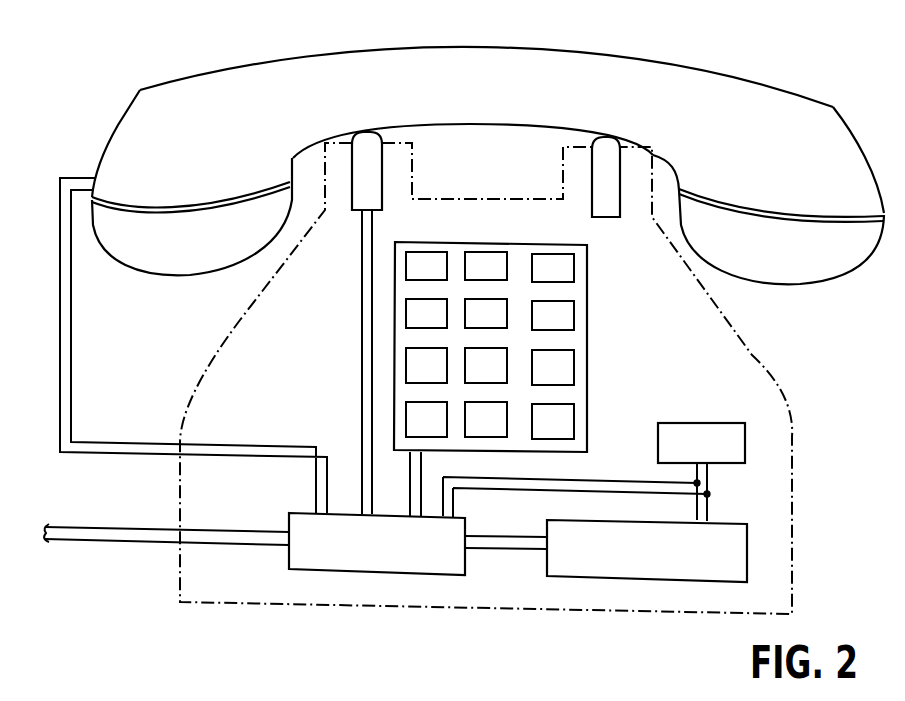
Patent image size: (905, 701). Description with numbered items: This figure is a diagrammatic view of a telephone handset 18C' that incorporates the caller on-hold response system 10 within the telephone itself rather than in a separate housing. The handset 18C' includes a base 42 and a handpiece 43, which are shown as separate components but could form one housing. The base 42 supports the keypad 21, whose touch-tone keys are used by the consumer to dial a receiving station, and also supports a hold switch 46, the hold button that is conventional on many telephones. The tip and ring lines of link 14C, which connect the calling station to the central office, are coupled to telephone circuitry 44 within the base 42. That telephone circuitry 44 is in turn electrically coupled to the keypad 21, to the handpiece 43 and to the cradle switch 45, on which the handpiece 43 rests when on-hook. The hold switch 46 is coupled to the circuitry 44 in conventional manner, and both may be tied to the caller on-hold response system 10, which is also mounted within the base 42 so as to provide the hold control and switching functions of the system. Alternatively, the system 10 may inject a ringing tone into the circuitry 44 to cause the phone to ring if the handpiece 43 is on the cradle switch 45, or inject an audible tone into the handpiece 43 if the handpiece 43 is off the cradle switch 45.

The telephone handset 18C' is at (472, 310).
The handpiece 43 is at (780, 95).
The cradle switch 45 is at (383, 180).
The base 42 is at (752, 355).
The keypad 21 is at (588, 352).
The hold switch 46 is at (690, 422).
The telephone circuitry 44 is at (288, 563).
The caller on-hold response system 10 is at (725, 520).
The link 14C is at (108, 530).